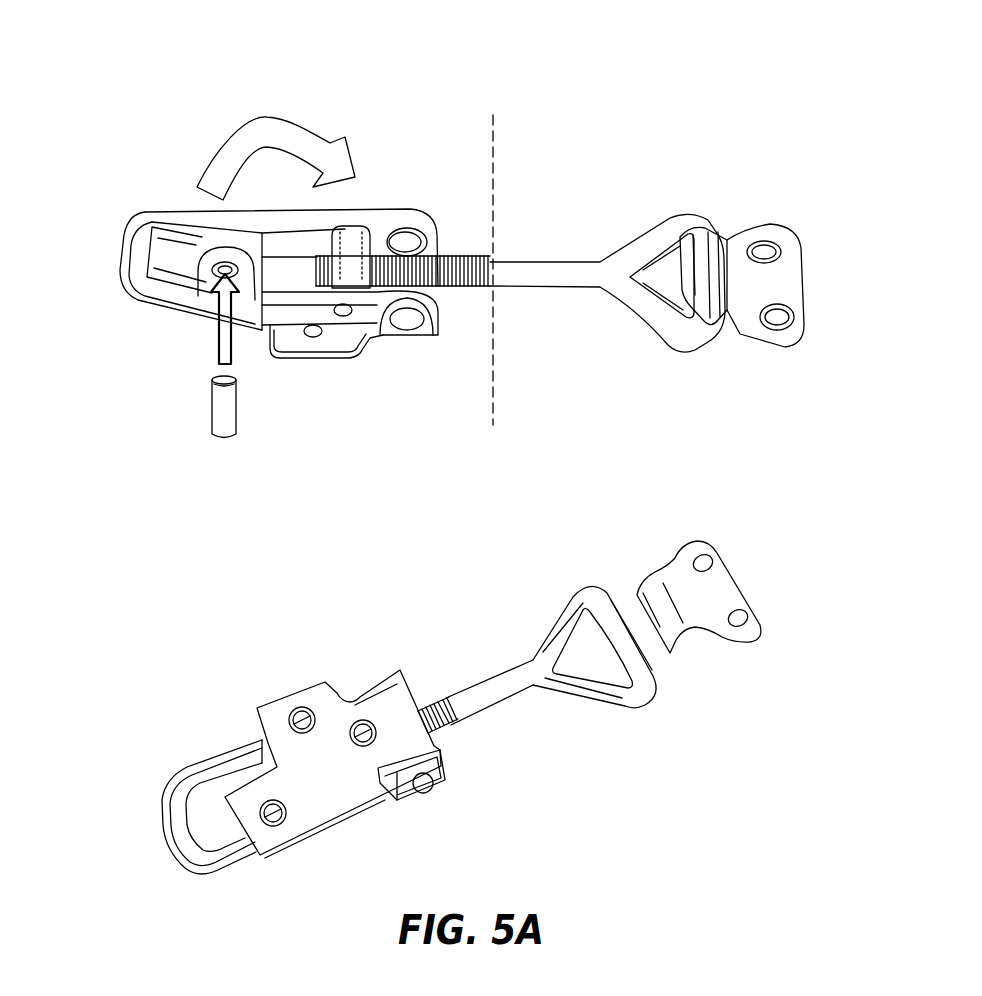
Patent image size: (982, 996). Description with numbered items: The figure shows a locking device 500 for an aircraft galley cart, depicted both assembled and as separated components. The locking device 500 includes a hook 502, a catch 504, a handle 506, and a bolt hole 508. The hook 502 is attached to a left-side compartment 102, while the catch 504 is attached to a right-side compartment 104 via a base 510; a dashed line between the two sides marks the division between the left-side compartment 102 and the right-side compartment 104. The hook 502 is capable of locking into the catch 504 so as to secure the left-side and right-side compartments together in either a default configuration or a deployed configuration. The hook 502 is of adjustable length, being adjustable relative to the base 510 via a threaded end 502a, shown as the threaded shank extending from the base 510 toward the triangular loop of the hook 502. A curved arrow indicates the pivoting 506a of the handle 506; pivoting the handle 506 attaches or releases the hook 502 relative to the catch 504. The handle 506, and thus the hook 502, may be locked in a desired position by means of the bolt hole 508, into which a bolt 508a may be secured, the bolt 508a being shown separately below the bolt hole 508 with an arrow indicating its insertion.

The locking device 500 is at (141, 70).
The hook 502 is at (657, 230).
The threaded end 502a is at (470, 270).
The catch 504 is at (702, 247).
The handle 506 is at (163, 305).
The pivoting 506a is at (301, 142).
The bolt hole 508 is at (226, 270).
The bolt 508a is at (227, 418).
The base 510 is at (342, 342).
The left-side compartment 102 is at (440, 422).
The right-side compartment 104 is at (570, 422).